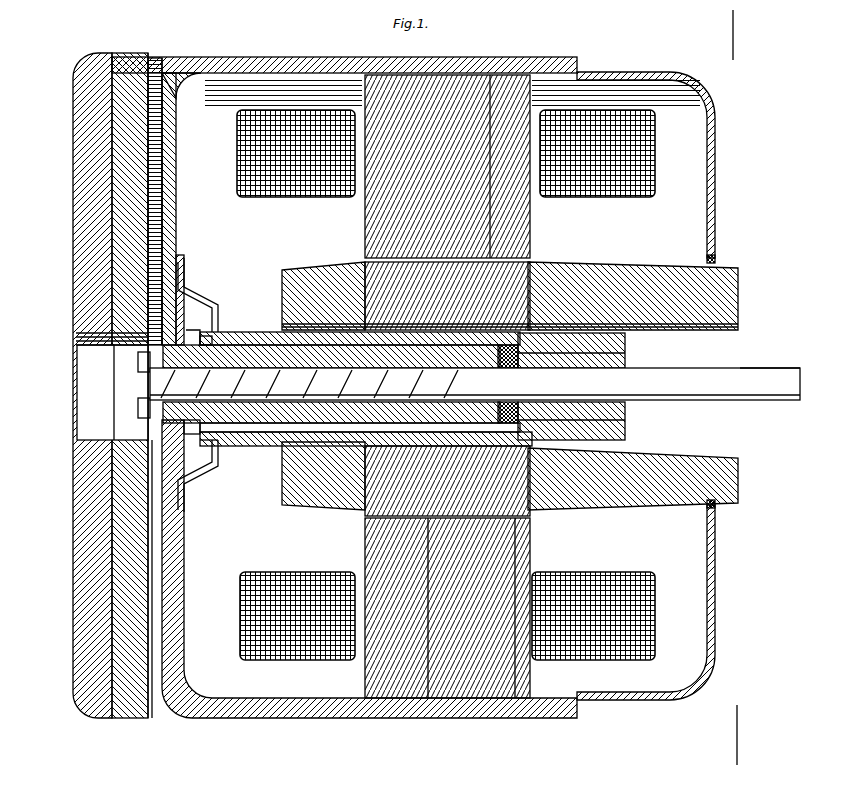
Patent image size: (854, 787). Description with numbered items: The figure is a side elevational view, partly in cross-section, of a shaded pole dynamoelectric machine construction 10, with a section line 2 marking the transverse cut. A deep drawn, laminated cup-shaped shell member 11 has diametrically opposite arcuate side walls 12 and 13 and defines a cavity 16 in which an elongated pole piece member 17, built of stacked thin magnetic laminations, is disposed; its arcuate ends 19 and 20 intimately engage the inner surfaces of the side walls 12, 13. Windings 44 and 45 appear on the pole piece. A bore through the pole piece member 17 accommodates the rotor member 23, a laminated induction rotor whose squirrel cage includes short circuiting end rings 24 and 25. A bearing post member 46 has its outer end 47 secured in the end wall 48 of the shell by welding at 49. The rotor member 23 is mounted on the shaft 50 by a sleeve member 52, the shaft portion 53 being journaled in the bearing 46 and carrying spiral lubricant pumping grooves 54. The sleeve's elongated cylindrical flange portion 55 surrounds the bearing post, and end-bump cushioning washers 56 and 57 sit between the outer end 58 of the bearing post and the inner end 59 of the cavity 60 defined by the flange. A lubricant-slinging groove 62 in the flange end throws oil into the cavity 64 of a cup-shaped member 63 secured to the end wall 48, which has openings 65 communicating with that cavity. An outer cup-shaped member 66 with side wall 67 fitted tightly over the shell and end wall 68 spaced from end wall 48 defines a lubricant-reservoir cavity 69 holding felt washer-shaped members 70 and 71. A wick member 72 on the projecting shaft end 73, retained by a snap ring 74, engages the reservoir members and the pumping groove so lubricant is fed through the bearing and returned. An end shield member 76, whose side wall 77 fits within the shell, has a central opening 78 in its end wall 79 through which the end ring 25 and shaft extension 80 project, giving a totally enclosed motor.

The section line 2- 2 is at (733, 35).
The dynamoelectric machine construction 10 is at (768, 168).
The cup-shaped shell member 11 is at (467, 391).
The side wall 12 is at (458, 58).
The side wall 13 is at (462, 712).
The cavity 16 is at (488, 397).
The pole piece member 17 is at (428, 700).
The end of pole piece member 19 is at (486, 72).
The end of pole piece member 20 is at (515, 700).
The rotor member 23 is at (360, 518).
The short circuiting end ring 24 is at (284, 292).
The short circuiting end ring 25 is at (740, 298).
The stator winding 44 is at (656, 170).
The stator winding 45 is at (656, 598).
The bearing post member 46 is at (278, 424).
The outer end of bearing post 47 is at (190, 330).
The end wall of shell member 48 is at (178, 215).
The weld 49 is at (186, 432).
The shaft 50 is at (475, 386).
The sleeve member 52 is at (625, 413).
The shaft portion 53 is at (262, 372).
The lubricant pumping groove 54 is at (232, 445).
The cylindrical flange portion 55 is at (276, 333).
The end-bump cushioning washer 56 is at (625, 346).
The end-bump cushioning washer 57 is at (610, 357).
The outer end of bearing post 58 is at (610, 440).
The inner end of cavity 59 is at (626, 428).
The cavity 60 is at (312, 432).
The lubricant-slinging groove 62 is at (205, 345).
The cup-shaped member 63 is at (200, 470).
The cavity 64 is at (214, 300).
The openings 65 is at (182, 262).
The outer cup-shaped member 66 is at (200, 50).
The side wall of outer cup-shaped member 67 is at (292, 55).
The end wall of outer cup-shaped member 68 is at (76, 395).
The lubricant-reservoir cavity 69 is at (106, 387).
The washer-shaped member 70 is at (90, 445).
The washer-shaped member 71 is at (120, 445).
The wick member 72 is at (78, 343).
The end of shaft 73 is at (148, 415).
The snap ring 74 is at (140, 358).
The end shield member 76 is at (674, 369).
The side wall of end shield 77 is at (625, 72).
The central opening 78 is at (716, 260).
The end wall of end shield 79 is at (715, 215).
The shaft extension 80 is at (772, 366).